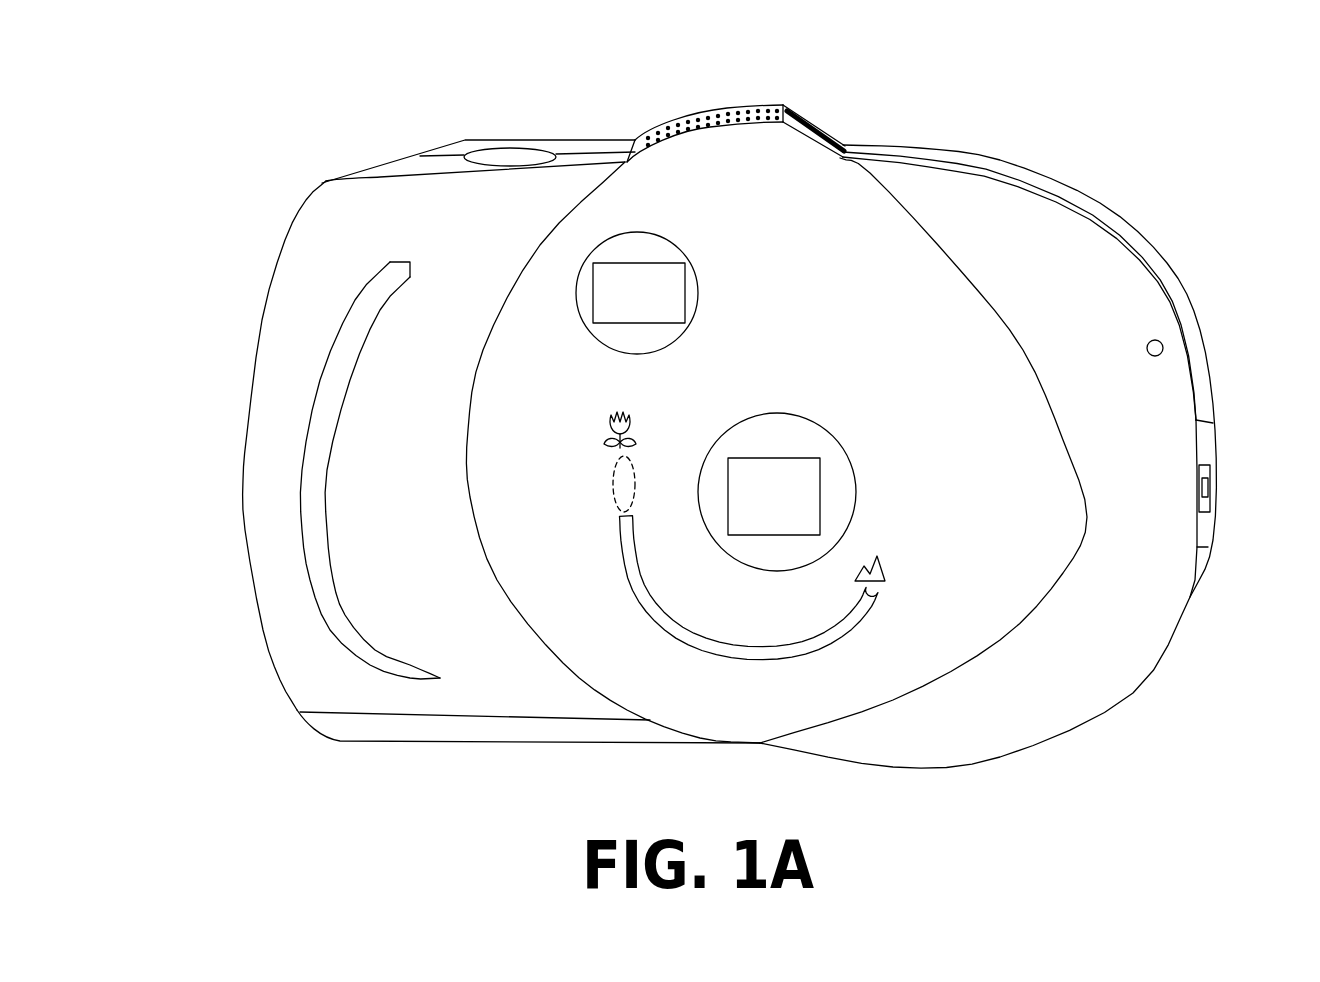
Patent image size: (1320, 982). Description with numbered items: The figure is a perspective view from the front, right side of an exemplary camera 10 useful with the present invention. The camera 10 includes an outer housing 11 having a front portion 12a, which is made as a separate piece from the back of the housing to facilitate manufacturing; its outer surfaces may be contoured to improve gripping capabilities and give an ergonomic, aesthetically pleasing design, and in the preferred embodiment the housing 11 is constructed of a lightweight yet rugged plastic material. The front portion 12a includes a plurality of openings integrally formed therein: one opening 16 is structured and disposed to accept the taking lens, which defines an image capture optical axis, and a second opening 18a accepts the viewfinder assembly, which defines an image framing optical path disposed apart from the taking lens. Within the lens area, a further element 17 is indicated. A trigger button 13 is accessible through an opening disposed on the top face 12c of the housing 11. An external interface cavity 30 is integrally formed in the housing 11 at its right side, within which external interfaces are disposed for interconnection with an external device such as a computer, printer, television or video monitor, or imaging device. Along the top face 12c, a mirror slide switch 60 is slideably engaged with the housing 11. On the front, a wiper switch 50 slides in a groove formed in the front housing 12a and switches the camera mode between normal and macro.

The camera 10 is at (270, 74).
The outer housing 11 is at (247, 432).
The front portion 12a is at (1033, 717).
The top face 12c is at (418, 158).
The trigger button 13 is at (537, 147).
The taking lens opening 16 is at (837, 440).
The lens opening 17 is at (773, 427).
The viewfinder opening 18a is at (697, 320).
The external interface cavity 30 is at (1213, 483).
The wiper switch 50 is at (765, 660).
The mirror slide switch 60 is at (813, 120).